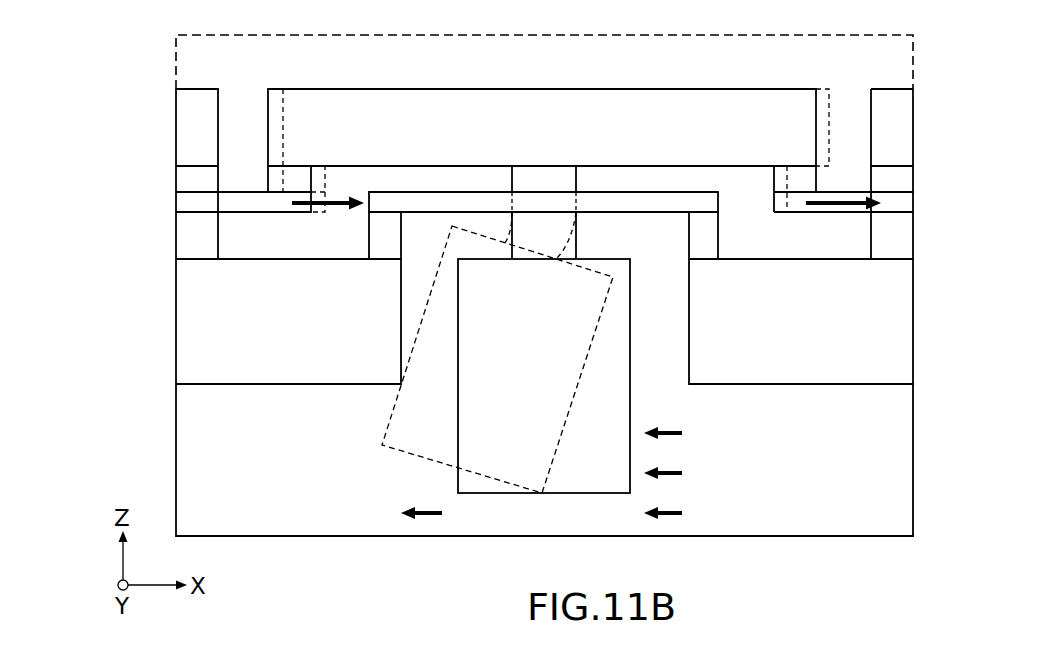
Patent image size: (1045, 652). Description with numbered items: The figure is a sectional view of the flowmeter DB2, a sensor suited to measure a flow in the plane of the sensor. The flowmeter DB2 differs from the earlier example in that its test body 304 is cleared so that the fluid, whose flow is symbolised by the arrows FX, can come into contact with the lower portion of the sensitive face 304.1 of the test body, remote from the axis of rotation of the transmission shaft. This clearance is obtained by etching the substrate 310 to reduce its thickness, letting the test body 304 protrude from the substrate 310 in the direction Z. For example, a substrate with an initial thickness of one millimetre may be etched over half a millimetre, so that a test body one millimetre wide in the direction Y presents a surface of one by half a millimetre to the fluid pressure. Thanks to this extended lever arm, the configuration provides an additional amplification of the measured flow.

The substrate 310 is at (189, 341).
The test body 304 is at (502, 506).
The sensitive face 304.1 is at (450, 425).
The flowmeter DB2 is at (147, 233).
The fluid flow arrows FX is at (668, 471).